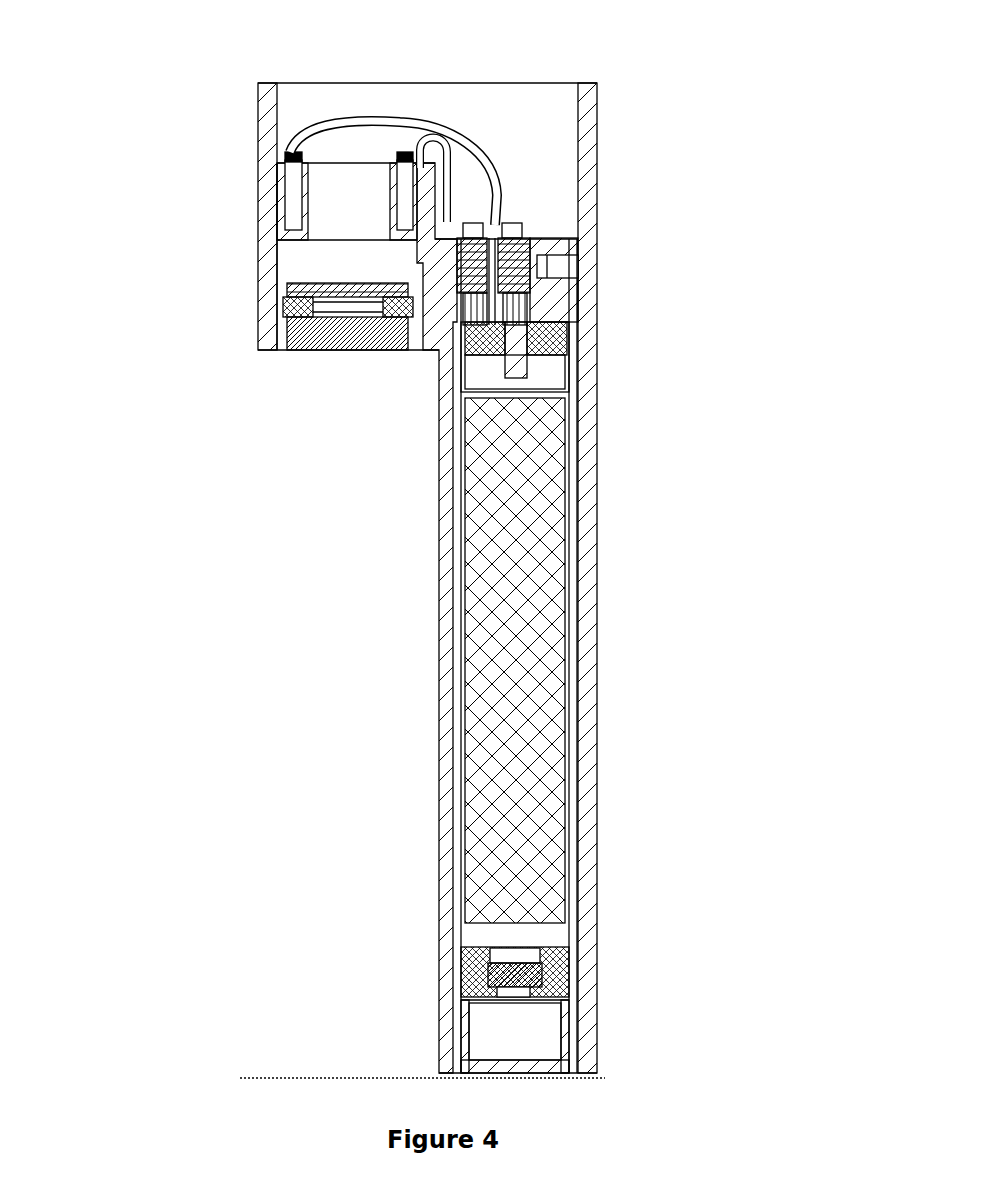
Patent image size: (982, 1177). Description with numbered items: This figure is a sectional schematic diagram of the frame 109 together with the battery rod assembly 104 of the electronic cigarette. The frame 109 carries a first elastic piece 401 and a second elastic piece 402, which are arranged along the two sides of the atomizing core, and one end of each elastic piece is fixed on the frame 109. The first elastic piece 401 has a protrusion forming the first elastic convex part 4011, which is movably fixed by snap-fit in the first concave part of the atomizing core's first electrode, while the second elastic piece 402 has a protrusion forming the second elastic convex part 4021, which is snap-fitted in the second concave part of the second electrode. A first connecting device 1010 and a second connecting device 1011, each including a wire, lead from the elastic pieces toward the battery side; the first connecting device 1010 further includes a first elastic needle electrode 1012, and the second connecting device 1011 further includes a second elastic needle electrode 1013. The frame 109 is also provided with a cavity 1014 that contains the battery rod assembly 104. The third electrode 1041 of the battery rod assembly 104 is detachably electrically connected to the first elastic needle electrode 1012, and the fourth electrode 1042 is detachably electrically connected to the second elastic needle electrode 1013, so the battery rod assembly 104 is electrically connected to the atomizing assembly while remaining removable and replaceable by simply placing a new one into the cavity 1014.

The first elastic piece 401 is at (192, 173).
The first elastic convex part 4011 is at (201, 191).
The second elastic piece 402 is at (261, 124).
The second elastic convex part 4021 is at (265, 235).
The first connecting device 1010 is at (430, 120).
The second connecting device 1011 is at (583, 136).
The first elastic needle electrode 1012 is at (613, 245).
The second elastic needle electrode 1013 is at (602, 368).
The third electrode 1041 is at (603, 336).
The fourth electrode 1042 is at (613, 427).
The frame 109 is at (370, 656).
The battery rod assembly 104 is at (406, 660).
The cavity 1014 is at (632, 959).